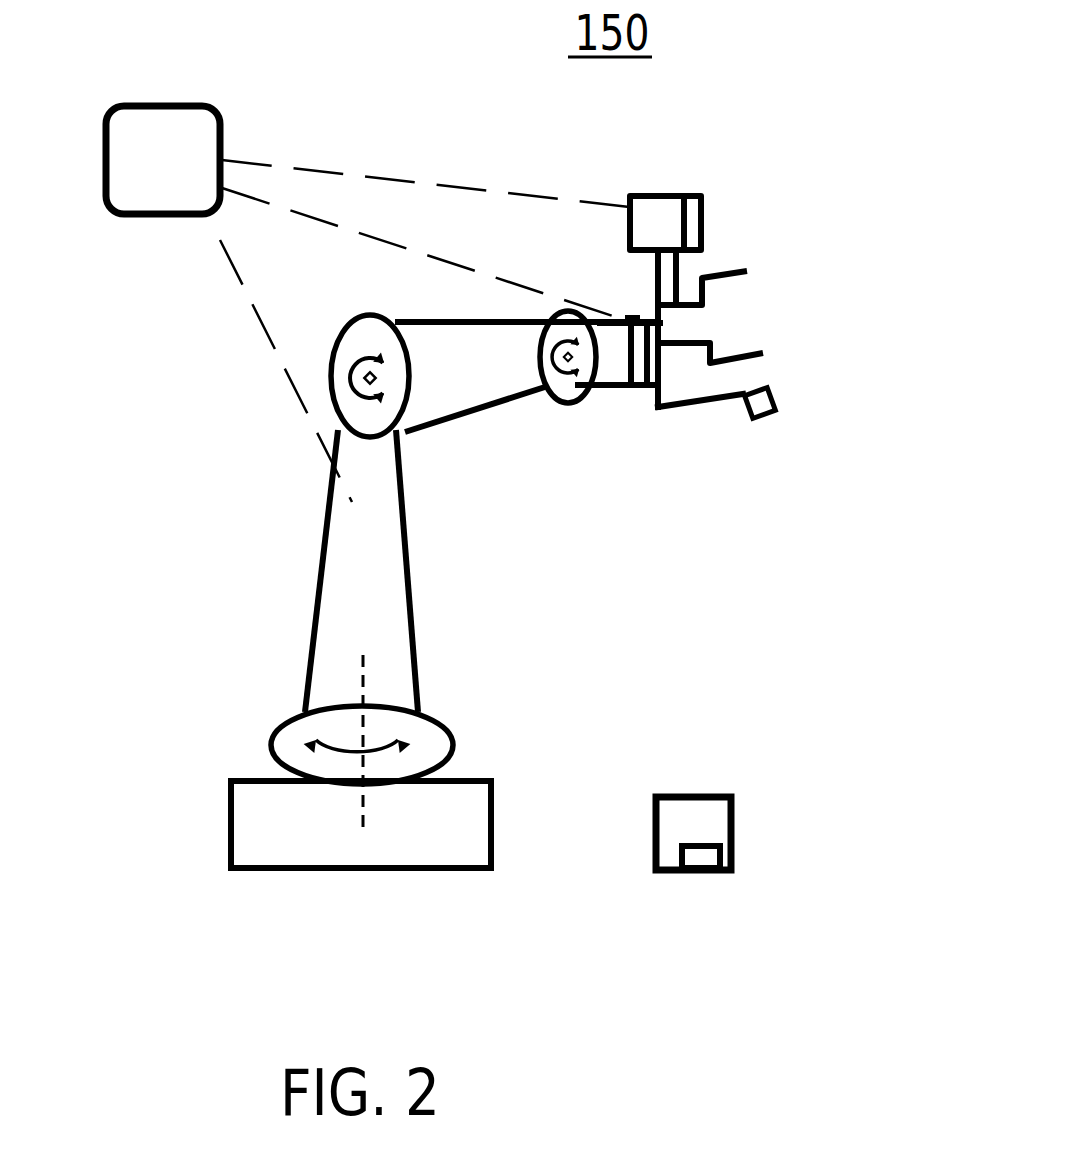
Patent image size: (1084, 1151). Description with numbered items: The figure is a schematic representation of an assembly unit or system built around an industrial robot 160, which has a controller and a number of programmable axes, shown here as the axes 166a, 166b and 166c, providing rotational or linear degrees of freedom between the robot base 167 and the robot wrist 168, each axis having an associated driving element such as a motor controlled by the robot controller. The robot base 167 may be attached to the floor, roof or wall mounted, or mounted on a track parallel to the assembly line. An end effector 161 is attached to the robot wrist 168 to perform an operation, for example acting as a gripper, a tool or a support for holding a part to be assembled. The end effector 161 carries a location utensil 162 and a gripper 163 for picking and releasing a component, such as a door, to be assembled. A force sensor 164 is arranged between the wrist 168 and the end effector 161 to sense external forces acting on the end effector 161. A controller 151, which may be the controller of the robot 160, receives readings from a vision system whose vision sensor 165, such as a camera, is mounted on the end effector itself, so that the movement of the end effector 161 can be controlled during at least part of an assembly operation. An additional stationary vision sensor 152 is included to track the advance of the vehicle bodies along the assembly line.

The controller 151 is at (173, 137).
The stationary vision sensor 152 is at (733, 850).
The industrial robot 160 is at (348, 633).
The end effector 161 is at (707, 442).
The location utensil 162 is at (775, 418).
The gripper 163 is at (763, 352).
The force sensor 164 is at (643, 390).
The vision sensor 165 is at (703, 207).
The axis 166a is at (359, 757).
The axis 166b is at (366, 376).
The axis 166c is at (550, 403).
The robot base 167 is at (425, 818).
The robot wrist 168 is at (626, 318).